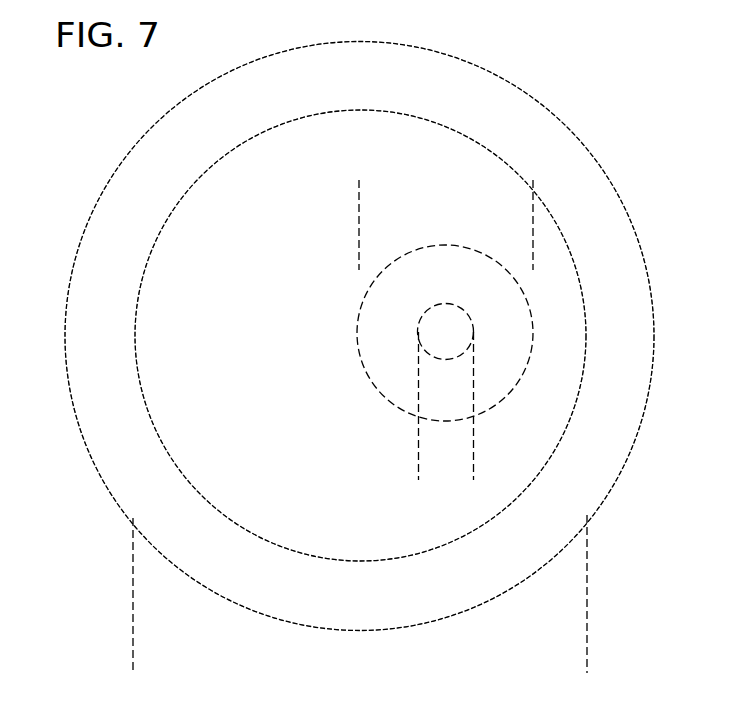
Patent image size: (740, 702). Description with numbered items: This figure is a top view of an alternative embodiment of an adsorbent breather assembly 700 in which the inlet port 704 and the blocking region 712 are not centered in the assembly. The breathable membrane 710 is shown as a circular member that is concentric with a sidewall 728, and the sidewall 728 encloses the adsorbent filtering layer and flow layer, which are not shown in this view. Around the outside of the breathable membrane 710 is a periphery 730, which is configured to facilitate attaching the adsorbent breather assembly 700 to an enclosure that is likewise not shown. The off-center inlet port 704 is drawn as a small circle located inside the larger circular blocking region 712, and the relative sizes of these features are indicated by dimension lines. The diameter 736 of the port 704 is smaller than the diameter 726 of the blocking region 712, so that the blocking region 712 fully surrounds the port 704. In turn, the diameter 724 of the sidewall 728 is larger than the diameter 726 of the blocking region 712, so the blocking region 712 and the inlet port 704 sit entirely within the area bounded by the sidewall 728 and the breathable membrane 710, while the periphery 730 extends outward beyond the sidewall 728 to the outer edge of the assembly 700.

The adsorbent breather assembly 700 is at (607, 108).
The inlet port 704 is at (418, 321).
The breathable membrane 710 is at (205, 349).
The blocking region 712 is at (520, 381).
The diameter of the sidewall 724 is at (587, 657).
The diameter of the blocking region 726 is at (533, 203).
The sidewall 728 is at (143, 272).
The periphery 730 is at (112, 355).
The diameter of the port 736 is at (535, 462).